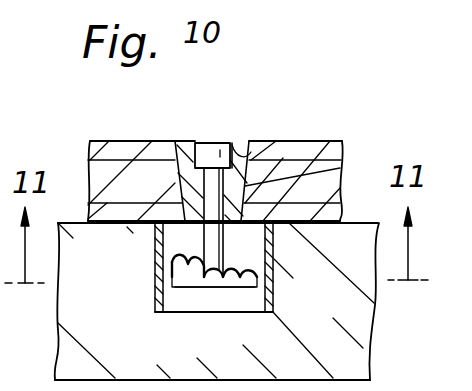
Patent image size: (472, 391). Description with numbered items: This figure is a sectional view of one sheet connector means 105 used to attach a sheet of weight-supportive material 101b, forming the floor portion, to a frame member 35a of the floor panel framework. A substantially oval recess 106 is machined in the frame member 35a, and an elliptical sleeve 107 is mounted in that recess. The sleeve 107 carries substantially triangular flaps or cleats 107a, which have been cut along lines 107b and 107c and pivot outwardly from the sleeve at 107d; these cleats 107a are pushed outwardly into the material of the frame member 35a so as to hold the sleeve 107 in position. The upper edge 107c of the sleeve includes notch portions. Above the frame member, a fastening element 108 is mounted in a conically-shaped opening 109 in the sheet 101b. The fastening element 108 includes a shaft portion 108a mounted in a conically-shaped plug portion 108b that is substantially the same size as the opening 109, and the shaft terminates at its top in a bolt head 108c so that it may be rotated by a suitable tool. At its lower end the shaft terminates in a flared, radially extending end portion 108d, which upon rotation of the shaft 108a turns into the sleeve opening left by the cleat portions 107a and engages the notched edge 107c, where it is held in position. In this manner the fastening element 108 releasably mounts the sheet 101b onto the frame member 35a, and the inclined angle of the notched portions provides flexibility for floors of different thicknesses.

The sheet of weight-supportive material 101b is at (322, 140).
The conically-shaped opening 109 is at (176, 183).
The conically-shaped plug portion 108b is at (185, 148).
The shaft portion 108a is at (336, 170).
The sheet connector means 105 is at (252, 141).
The fastening element 108 is at (262, 160).
The bolt head 108c is at (213, 152).
The frame member 35a is at (363, 347).
The elliptical sleeve 107 is at (275, 302).
The upper edge 107c is at (189, 257).
The oval recess 106 is at (250, 252).
The pivot of cleats 107d is at (171, 279).
The triangular flaps or cleats 107a is at (171, 285).
The cut line 107b is at (191, 282).
The flared end portion 108d is at (214, 272).